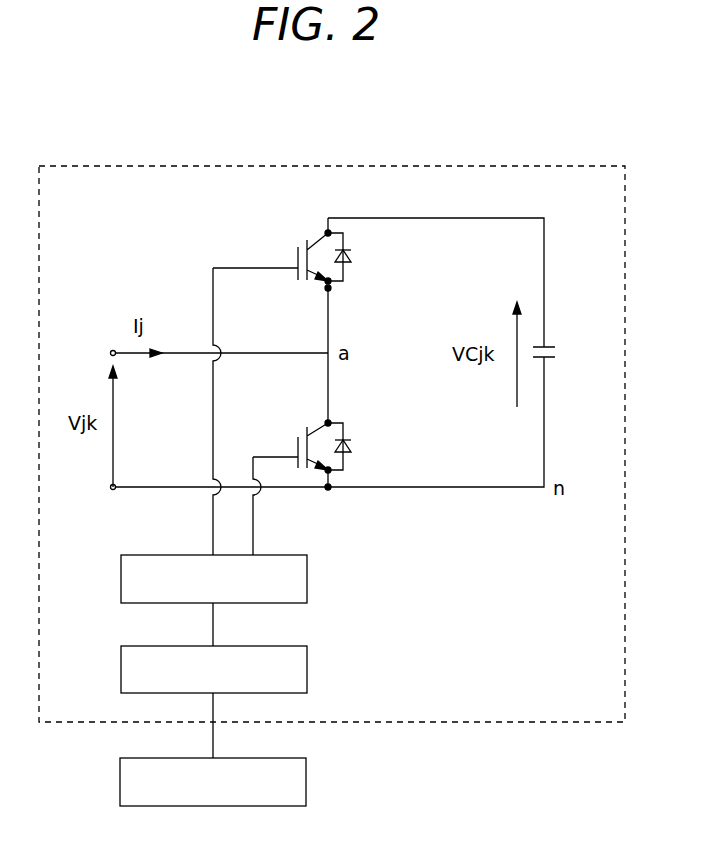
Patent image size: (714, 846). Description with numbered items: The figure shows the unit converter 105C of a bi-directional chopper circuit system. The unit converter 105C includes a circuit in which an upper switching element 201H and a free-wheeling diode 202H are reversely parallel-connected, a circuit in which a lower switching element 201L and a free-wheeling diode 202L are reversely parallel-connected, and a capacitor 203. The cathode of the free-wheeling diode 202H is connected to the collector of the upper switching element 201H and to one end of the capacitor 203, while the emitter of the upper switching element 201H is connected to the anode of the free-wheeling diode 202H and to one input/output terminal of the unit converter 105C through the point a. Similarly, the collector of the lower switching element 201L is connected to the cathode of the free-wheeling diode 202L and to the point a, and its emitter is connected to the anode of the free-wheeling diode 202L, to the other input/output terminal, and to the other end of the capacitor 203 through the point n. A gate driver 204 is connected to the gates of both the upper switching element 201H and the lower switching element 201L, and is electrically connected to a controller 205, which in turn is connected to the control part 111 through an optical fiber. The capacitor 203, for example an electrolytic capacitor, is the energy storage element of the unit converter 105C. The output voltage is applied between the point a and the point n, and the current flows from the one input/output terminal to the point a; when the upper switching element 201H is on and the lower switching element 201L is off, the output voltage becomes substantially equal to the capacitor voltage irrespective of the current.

The unit converter 105C is at (140, 164).
The upper switching element 201H is at (293, 252).
The free-wheeling diode 202H is at (353, 262).
The lower switching element 201L is at (302, 432).
The free-wheeling diode 202L is at (353, 440).
The capacitor 203 is at (540, 360).
The gate driver 204 is at (307, 580).
The controller 205 is at (307, 668).
The control part 111 is at (306, 782).